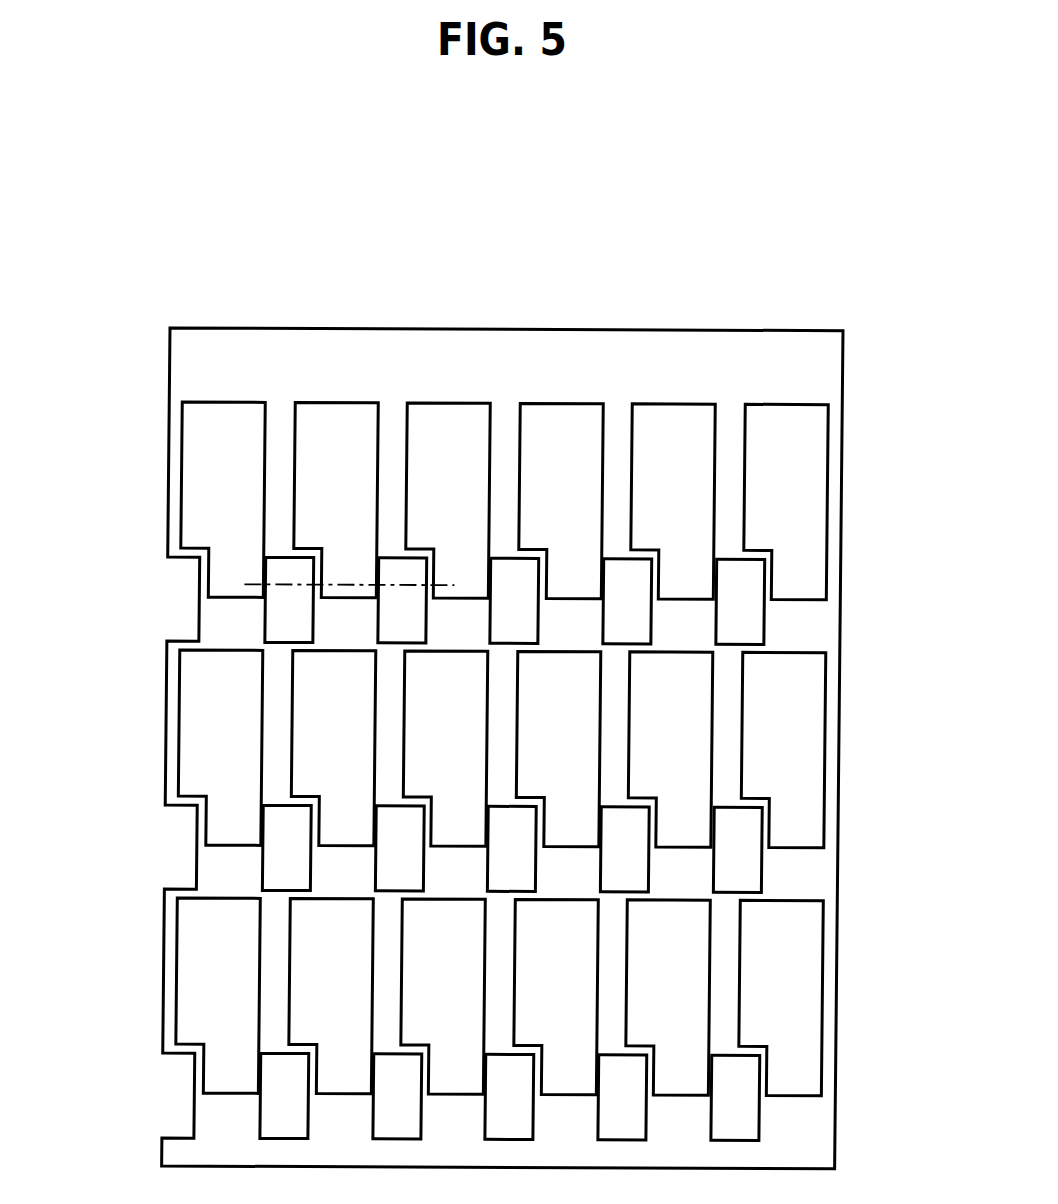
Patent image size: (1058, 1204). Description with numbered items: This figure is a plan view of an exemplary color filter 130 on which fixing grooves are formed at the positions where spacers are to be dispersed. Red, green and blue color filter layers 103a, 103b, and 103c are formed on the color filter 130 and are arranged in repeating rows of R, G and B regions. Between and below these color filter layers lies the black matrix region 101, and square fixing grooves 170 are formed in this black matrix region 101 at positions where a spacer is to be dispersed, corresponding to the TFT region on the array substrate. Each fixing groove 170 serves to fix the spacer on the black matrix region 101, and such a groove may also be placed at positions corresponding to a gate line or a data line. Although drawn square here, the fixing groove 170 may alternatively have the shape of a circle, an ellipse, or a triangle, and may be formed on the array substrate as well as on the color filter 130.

The color filter 130 is at (934, 305).
The black matrix region 101 is at (729, 346).
The red color filter layer 103a is at (197, 431).
The green color filter layer 103b is at (336, 416).
The blue color filter layer 103c is at (451, 412).
The fixing groove 170 is at (748, 606).